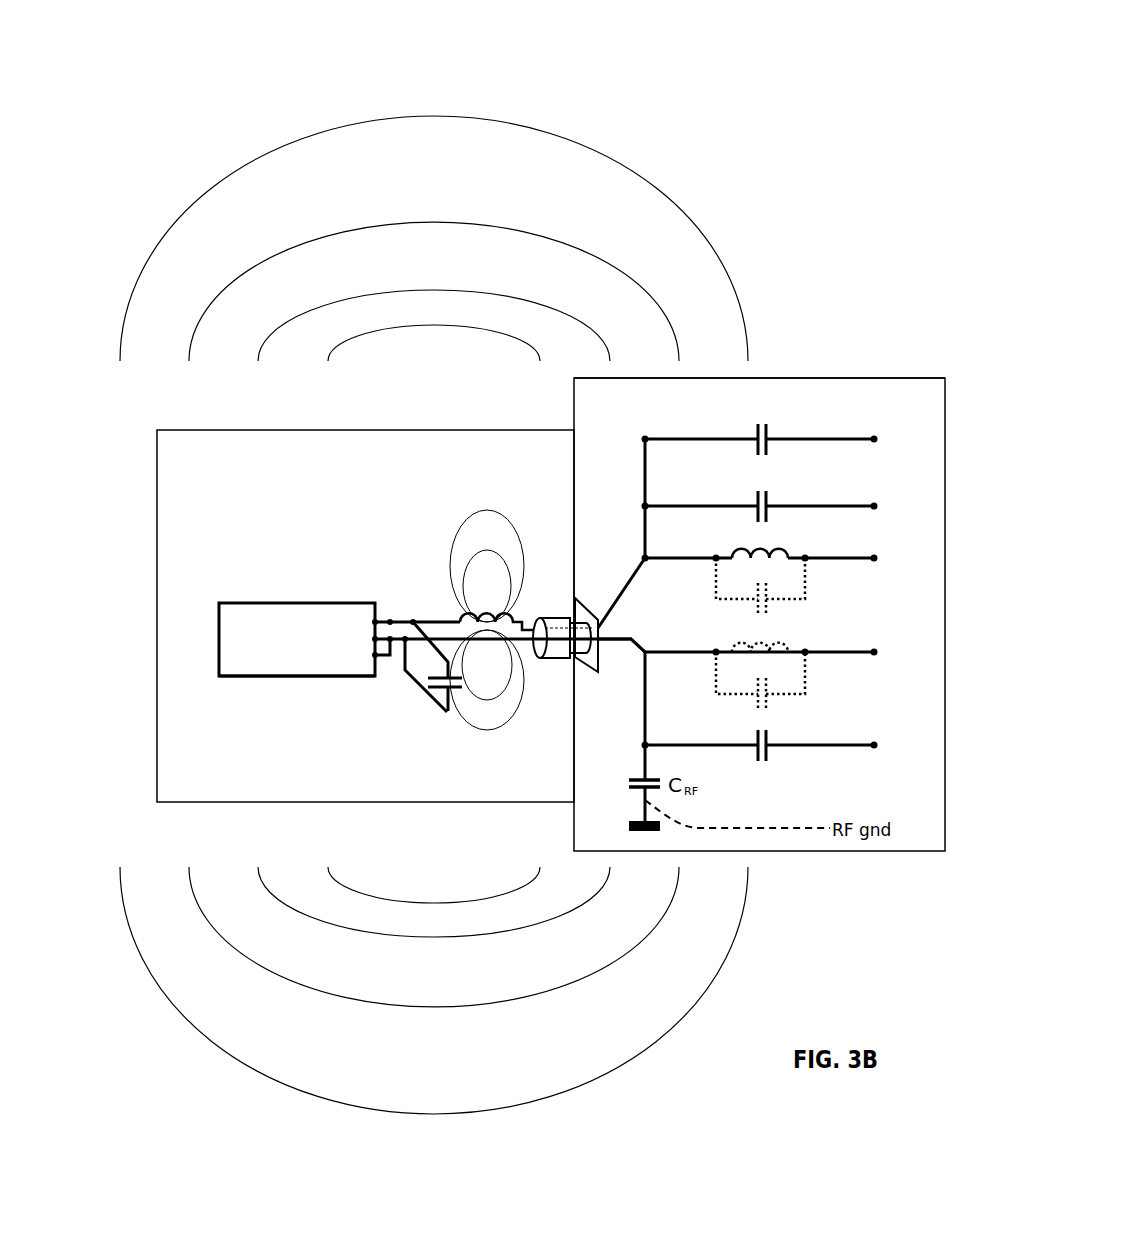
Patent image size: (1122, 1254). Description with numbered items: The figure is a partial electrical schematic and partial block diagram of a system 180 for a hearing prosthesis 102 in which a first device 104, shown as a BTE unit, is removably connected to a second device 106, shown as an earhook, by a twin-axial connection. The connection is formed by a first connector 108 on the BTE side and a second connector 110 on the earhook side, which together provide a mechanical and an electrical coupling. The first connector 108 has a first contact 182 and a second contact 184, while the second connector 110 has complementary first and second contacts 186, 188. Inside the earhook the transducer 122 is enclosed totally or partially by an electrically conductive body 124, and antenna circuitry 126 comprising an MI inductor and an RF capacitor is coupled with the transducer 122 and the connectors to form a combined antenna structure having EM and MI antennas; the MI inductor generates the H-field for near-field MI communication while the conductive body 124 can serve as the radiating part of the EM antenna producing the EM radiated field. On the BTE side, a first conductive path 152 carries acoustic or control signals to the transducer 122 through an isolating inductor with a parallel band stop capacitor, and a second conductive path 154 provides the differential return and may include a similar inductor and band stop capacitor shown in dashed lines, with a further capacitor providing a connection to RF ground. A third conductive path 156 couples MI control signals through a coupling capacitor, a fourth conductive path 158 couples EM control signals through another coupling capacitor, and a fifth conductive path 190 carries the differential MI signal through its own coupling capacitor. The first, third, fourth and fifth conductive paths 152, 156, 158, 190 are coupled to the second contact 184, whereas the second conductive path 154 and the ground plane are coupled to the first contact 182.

The hearing prosthesis 102 is at (845, 368).
The first device 104 is at (766, 378).
The second device 106 is at (157, 626).
The first connector or interface 108 is at (581, 600).
The second connector or interface 110 is at (560, 660).
The transducer 122 is at (254, 603).
The electrically conductive body 124 is at (238, 677).
The antenna circuitry 126 is at (440, 592).
The first conductive path 152 is at (876, 558).
The second conductive path 154 is at (876, 652).
The third conductive path 156 is at (876, 506).
The fourth conductive path 158 is at (876, 439).
The system 180 is at (744, 163).
The first contact 182 is at (600, 672).
The second contact 184 is at (603, 630).
The first contact 186 is at (541, 660).
The second contact 188 is at (540, 617).
The fifth conductive path 190 is at (876, 745).